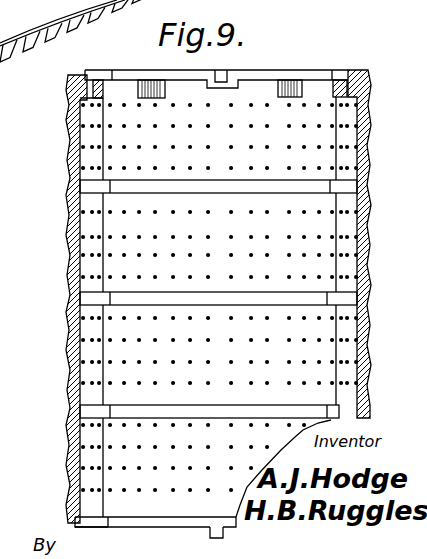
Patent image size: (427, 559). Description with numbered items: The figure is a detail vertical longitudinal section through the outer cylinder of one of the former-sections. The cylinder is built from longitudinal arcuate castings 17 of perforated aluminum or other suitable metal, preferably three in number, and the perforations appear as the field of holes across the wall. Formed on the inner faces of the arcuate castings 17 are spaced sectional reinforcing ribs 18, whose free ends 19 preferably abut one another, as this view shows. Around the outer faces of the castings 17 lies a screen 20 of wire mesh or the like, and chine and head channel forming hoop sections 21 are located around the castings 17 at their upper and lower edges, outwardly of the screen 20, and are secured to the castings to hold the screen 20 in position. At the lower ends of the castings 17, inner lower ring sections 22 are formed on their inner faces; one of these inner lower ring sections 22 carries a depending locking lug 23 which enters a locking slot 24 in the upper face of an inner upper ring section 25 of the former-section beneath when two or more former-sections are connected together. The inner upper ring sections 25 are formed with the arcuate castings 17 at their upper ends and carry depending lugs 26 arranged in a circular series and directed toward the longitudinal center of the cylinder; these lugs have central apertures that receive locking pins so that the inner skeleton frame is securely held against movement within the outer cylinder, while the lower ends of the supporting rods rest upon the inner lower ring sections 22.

The longitudinal arcuate castings 17 is at (88, 245).
The sectional reinforcing ribs 18 is at (92, 185).
The free ends 19 is at (330, 186).
The screen 20 is at (70, 342).
The chine and head channel forming hoop sections 21 is at (68, 90).
The inner lower ring sections 22 is at (68, 522).
The depending locking lug 23 is at (215, 532).
The locking slot 24 is at (228, 70).
The inner upper ring sections 25 is at (302, 78).
The depending lugs 26 is at (152, 91).